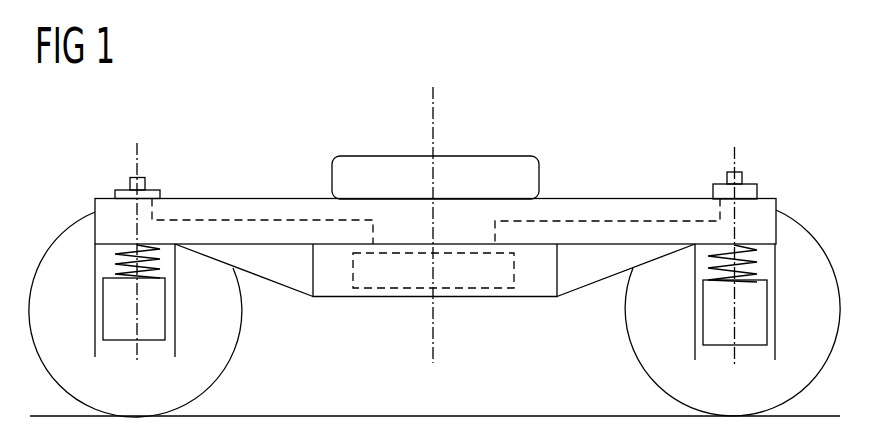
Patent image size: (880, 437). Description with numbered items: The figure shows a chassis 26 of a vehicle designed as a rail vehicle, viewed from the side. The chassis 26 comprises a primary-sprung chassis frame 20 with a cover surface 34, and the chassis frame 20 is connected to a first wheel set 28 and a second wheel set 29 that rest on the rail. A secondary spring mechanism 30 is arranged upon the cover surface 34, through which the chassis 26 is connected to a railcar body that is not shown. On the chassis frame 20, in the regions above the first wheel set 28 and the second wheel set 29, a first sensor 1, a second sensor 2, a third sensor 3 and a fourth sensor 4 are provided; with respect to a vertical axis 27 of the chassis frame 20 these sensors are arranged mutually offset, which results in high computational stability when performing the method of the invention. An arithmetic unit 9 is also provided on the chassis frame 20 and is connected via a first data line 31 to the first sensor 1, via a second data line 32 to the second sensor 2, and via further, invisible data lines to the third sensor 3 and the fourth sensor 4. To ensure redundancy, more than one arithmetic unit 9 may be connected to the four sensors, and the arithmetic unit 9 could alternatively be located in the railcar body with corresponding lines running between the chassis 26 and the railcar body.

The first sensor 1 is at (130, 181).
The second sensor 2 is at (757, 198).
The third sensor 3 is at (144, 178).
The fourth sensor 4 is at (733, 172).
The arithmetic unit 9 is at (486, 279).
The chassis frame 20 is at (587, 286).
The chassis 26 is at (562, 142).
The vertical axis 27 is at (433, 100).
The first wheel set 28 is at (225, 345).
The second wheel set 29 is at (647, 362).
The secondary spring mechanism 30 is at (488, 166).
The first data line 31 is at (285, 220).
The second data line 32 is at (597, 221).
The cover surface 34 is at (225, 198).